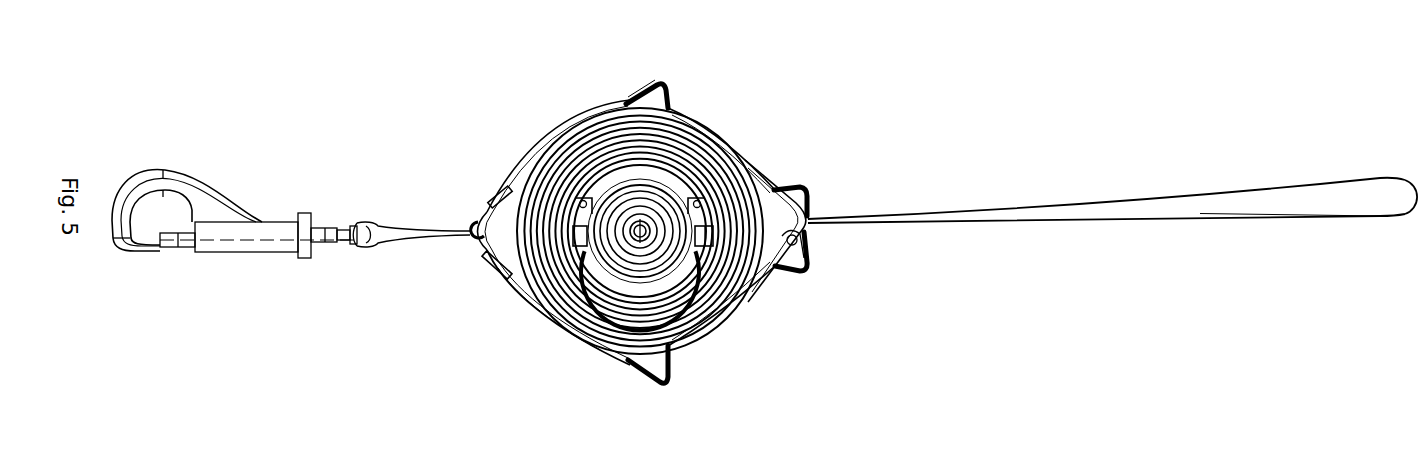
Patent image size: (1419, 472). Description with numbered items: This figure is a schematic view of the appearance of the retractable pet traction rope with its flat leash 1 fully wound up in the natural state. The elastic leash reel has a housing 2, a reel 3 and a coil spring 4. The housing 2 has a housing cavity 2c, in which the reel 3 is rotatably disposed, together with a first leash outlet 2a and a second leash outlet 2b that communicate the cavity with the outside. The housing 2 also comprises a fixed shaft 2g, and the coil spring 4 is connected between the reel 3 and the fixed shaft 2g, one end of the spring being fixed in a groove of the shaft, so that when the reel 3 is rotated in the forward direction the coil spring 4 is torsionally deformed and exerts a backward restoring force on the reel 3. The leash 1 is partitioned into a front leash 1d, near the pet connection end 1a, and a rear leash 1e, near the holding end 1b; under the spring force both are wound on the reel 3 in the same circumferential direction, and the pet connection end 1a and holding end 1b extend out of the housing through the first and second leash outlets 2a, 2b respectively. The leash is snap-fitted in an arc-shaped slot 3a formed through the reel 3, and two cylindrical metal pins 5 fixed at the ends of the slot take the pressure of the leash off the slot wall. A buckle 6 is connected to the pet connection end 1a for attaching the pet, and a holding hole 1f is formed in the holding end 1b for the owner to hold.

The flat leash 1 is at (1112, 187).
The pet connection end 1a is at (377, 222).
The holding end 1b is at (1228, 190).
The front leash 1d is at (505, 197).
The rear leash 1e is at (808, 263).
The holding hole 1f is at (1307, 198).
The housing 2 is at (703, 135).
The first leash outlet 2a is at (482, 242).
The second leash outlet 2b is at (800, 217).
The housing cavity 2c is at (522, 287).
The fixed shaft 2g is at (675, 253).
The reel 3 is at (623, 277).
The arc-shaped slot 3a is at (603, 192).
The coil spring 4 is at (650, 263).
The metal pin 5 is at (573, 197).
The buckle 6 is at (175, 185).